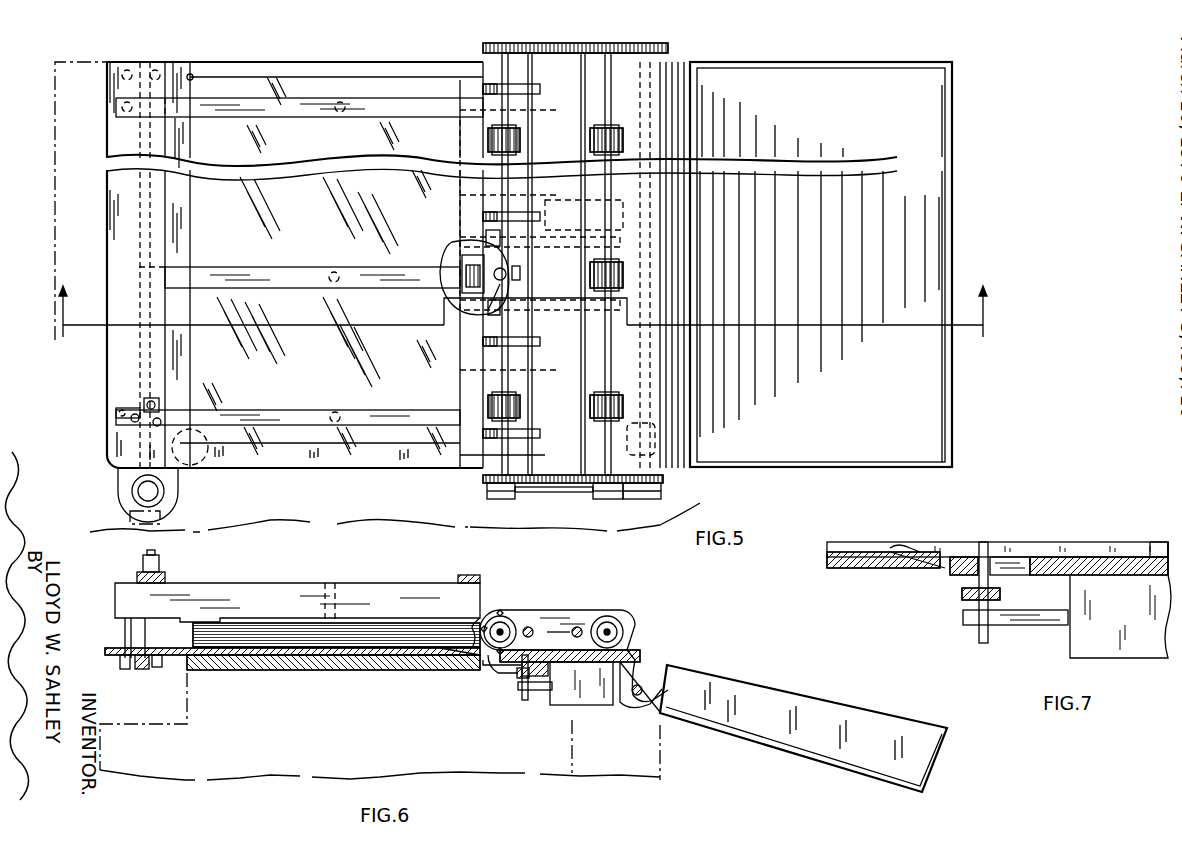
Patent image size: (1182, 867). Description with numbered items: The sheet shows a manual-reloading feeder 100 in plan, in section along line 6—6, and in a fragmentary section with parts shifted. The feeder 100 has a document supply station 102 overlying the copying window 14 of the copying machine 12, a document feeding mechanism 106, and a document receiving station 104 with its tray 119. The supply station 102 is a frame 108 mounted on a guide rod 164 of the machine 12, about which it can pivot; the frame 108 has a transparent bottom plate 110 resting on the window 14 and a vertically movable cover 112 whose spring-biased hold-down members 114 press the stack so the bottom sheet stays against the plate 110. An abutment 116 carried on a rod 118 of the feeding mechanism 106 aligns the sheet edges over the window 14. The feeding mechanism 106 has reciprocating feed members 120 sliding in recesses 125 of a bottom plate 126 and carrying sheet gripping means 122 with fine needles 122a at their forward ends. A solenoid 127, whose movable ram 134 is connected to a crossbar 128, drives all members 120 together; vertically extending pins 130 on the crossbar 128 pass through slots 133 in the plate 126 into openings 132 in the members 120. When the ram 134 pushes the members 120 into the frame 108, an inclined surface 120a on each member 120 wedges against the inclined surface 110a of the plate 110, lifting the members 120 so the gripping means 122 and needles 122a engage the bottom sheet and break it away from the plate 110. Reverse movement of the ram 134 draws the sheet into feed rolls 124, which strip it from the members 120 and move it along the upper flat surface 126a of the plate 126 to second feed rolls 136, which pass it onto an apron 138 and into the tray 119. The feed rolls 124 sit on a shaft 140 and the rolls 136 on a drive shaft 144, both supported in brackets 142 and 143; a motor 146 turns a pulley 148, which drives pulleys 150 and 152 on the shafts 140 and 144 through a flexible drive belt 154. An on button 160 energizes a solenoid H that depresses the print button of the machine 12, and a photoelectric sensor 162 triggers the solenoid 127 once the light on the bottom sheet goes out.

In FIG. 5, the copying machine 12 is at (55, 86).
In FIG. 6, the copying machine 12 is at (380, 726).
In FIG. 6, the copying window 14 is at (310, 670).
In FIG. 5, the feeder 100 is at (100, 222).
In FIG. 6, the feeder 100 is at (508, 592).
In FIG. 5, the document supply station 102 is at (303, 38).
In FIG. 6, the document supply station 102 is at (387, 583).
In FIG. 5, the document receiving station 104 is at (846, 62).
In FIG. 6, the document receiving station 104 is at (750, 732).
In FIG. 5, the document feeding mechanism 106 is at (560, 44).
In FIG. 6, the document feeding mechanism 106 is at (590, 611).
In FIG. 5, the frame 108 is at (238, 62).
In FIG. 6, the frame 108 is at (125, 600).
In FIG. 6, the transparent bottom plate 110 is at (190, 654).
In FIG. 7, the transparent bottom plate 110 is at (854, 568).
In FIG. 6, the inclined surface 110a is at (454, 658).
In FIG. 7, the inclined surface 110a is at (912, 570).
In FIG. 6, the cover 112 is at (270, 570).
In FIG. 5, the spring biased hold-down members 114 is at (349, 114).
In FIG. 6, the spring biased hold-down members 114 is at (340, 620).
In FIG. 5, the abutment 116 is at (532, 88).
In FIG. 6, the abutment 116 is at (490, 622).
In FIG. 5, the rod 118 is at (556, 264).
In FIG. 6, the rod 118 is at (536, 630).
In FIG. 6, the tray 119 is at (673, 687).
In FIG. 5, the reciprocating feed members 120 is at (462, 248).
In FIG. 6, the reciprocating feed members 120 is at (513, 675).
In FIG. 6, the inclined surface 120a is at (514, 666).
In FIG. 7, the inclined surface 120a is at (927, 550).
In FIG. 5, the sheet gripping means 122 is at (521, 306).
In FIG. 6, the sheet gripping means 122 is at (470, 626).
In FIG. 7, the fine needles 122a is at (903, 548).
In FIG. 5, the feed rolls 124 is at (488, 140).
In FIG. 6, the feed rolls 124 is at (510, 618).
In FIG. 5, the recesses 125 is at (491, 301).
In FIG. 6, the recesses 125 is at (641, 644).
In FIG. 7, the recesses 125 is at (1168, 542).
In FIG. 6, the bottom plate 126 is at (641, 658).
In FIG. 7, the bottom plate 126 is at (1096, 556).
In FIG. 5, the upper flat surface 126a is at (545, 455).
In FIG. 7, the upper flat surface 126a is at (1160, 556).
In FIG. 5, the solenoid 127 is at (541, 240).
In FIG. 6, the solenoid 127 is at (579, 708).
In FIG. 7, the solenoid 127 is at (1085, 640).
In FIG. 6, the crossbar 128 is at (516, 678).
In FIG. 7, the crossbar 128 is at (964, 600).
In FIG. 5, the vertically extending pins 130 is at (462, 262).
In FIG. 6, the vertically extending pins 130 is at (540, 694).
In FIG. 7, the vertically extending pins 130 is at (968, 576).
In FIG. 7, the openings 132 is at (988, 544).
In FIG. 6, the slots 133 is at (558, 633).
In FIG. 7, the slots 133 is at (1038, 576).
In FIG. 6, the movable ram 134 is at (517, 693).
In FIG. 7, the movable ram 134 is at (1031, 626).
In FIG. 5, the second feed rolls 136 is at (623, 142).
In FIG. 6, the second feed rolls 136 is at (624, 621).
In FIG. 6, the apron 138 is at (664, 660).
In FIG. 5, the shaft 140 is at (508, 43).
In FIG. 5, the bracket 142 is at (483, 482).
In FIG. 5, the bracket 143 is at (670, 48).
In FIG. 6, the bracket 143 is at (603, 610).
In FIG. 5, the drive shaft 144 is at (610, 64).
In FIG. 5, the motor 146 is at (658, 454).
In FIG. 5, the pulley 148 is at (655, 505).
In FIG. 5, the pulley 150 is at (490, 499).
In FIG. 5, the pulley 152 is at (598, 499).
In FIG. 5, the flexible drive belt 154 is at (560, 488).
In FIG. 5, the on button 160 is at (158, 406).
In FIG. 6, the on button 160 is at (152, 554).
In FIG. 5, the photoelectric sensor 162 is at (204, 460).
In FIG. 6, the guide rod 164 is at (140, 670).
In FIG. 5, the solenoid H is at (161, 494).
In FIG. 5, the section line 6— 6 is at (522, 299).